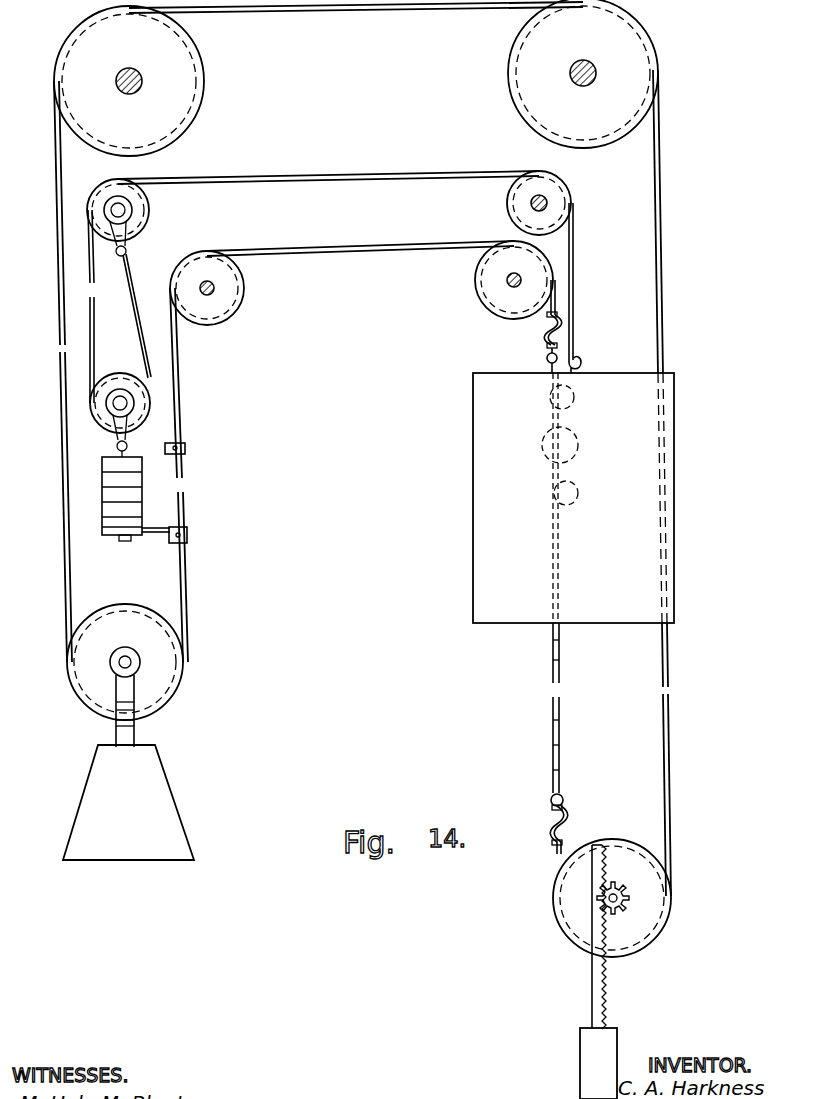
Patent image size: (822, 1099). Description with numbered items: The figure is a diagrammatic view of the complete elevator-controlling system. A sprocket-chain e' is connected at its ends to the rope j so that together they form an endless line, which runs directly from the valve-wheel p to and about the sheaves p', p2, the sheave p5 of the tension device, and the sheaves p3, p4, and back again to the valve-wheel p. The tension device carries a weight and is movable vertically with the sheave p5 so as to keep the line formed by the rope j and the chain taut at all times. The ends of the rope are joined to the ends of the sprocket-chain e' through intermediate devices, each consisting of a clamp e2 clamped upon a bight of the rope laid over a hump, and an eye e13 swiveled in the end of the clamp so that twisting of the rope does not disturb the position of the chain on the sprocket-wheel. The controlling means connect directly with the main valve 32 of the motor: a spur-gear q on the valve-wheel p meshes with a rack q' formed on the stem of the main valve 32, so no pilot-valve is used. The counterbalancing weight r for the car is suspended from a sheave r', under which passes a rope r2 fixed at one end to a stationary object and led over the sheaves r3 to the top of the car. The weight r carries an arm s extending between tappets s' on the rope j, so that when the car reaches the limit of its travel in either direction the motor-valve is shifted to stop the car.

The rope j is at (336, 14).
The valve-wheel p is at (635, 898).
The sheave p' is at (583, 74).
The sheave p2 is at (129, 81).
The sheave p3 is at (215, 290).
The sheave p4 is at (506, 277).
The sheave of the tension device p5 is at (128, 732).
The counterbalancing weight r is at (330, 355).
The sheave r' is at (151, 415).
The rope r2 is at (100, 314).
The sheaves r3 is at (123, 193).
The arm s is at (156, 546).
The tappets s' is at (192, 494).
The sprocket-chain e' is at (570, 738).
The spring e2 is at (546, 327).
The eye e13 is at (546, 360).
The spur-gear q is at (625, 893).
The rack q' is at (611, 937).
The main valve 32 is at (598, 994).